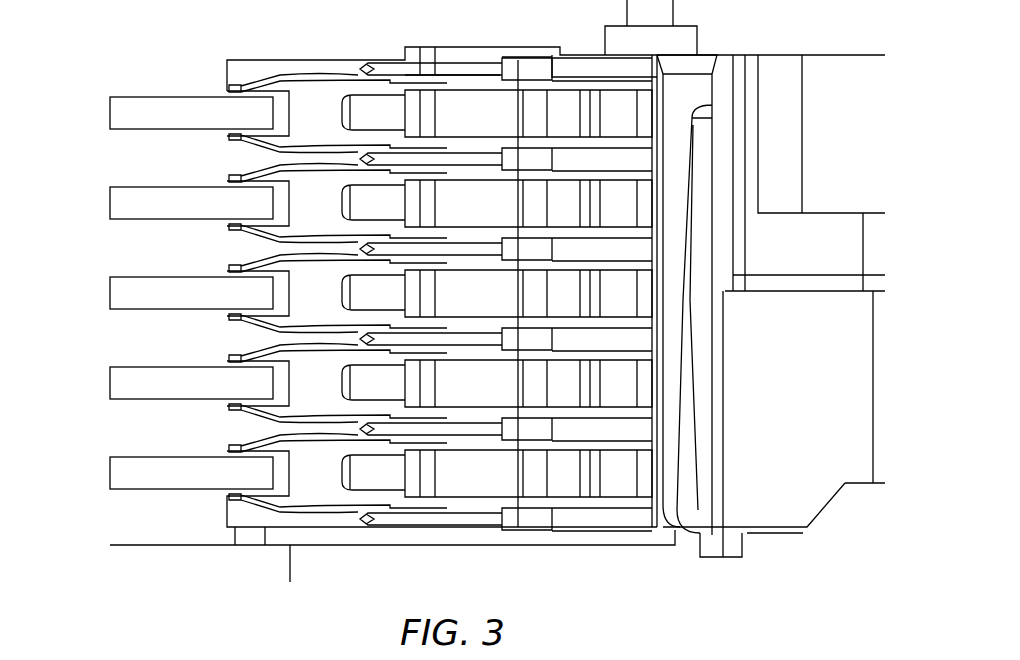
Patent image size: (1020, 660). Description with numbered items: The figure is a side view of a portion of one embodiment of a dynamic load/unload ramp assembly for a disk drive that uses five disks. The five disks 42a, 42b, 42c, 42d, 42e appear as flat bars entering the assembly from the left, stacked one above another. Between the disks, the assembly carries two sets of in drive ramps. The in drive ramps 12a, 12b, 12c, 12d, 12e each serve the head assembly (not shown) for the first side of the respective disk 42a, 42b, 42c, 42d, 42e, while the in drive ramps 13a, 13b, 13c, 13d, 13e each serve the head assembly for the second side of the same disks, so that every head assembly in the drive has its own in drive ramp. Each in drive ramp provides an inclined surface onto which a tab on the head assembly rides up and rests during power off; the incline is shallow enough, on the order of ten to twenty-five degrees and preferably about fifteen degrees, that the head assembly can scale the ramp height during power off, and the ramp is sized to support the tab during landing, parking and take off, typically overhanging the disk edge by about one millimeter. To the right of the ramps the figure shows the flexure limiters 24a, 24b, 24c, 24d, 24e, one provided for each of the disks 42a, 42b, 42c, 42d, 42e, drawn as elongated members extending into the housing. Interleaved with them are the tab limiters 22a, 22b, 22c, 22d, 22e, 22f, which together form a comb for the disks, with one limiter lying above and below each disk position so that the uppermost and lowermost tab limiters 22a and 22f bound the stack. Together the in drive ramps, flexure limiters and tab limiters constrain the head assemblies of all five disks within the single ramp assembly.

The in drive ramp 12a is at (240, 84).
The in drive ramp 12b is at (240, 176).
The in drive ramp 12c is at (292, 258).
The in drive ramp 12d is at (243, 356).
The in drive ramp 12e is at (243, 446).
The in drive ramp 13a is at (241, 139).
The in drive ramp 13b is at (309, 237).
The in drive ramp 13c is at (243, 320).
The in drive ramp 13d is at (243, 410).
The in drive ramp 13e is at (243, 499).
The tab limiter 22a is at (386, 64).
The tab limiter 22b is at (376, 152).
The tab limiter 22c is at (376, 242).
The tab limiter 22d is at (376, 332).
The tab limiter 22e is at (376, 422).
The tab limiter 22f is at (382, 527).
The flexure limiter 24a is at (353, 108).
The flexure limiter 24b is at (353, 198).
The flexure limiter 24c is at (353, 288).
The flexure limiter 24d is at (353, 378).
The flexure limiter 24e is at (353, 468).
The disk 42a is at (144, 118).
The disk 42b is at (144, 208).
The disk 42c is at (144, 298).
The disk 42d is at (144, 388).
The disk 42e is at (144, 478).